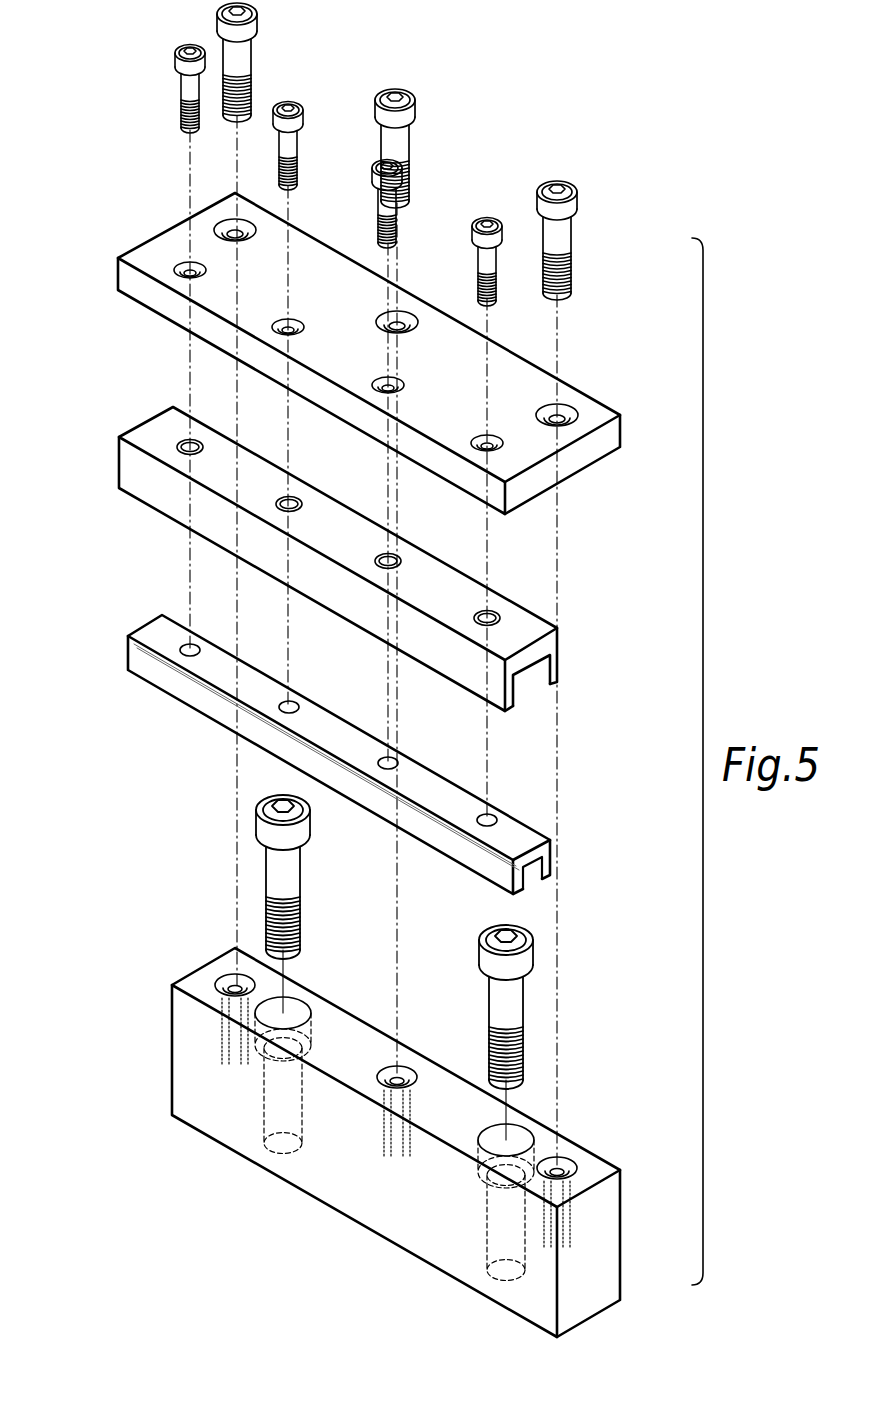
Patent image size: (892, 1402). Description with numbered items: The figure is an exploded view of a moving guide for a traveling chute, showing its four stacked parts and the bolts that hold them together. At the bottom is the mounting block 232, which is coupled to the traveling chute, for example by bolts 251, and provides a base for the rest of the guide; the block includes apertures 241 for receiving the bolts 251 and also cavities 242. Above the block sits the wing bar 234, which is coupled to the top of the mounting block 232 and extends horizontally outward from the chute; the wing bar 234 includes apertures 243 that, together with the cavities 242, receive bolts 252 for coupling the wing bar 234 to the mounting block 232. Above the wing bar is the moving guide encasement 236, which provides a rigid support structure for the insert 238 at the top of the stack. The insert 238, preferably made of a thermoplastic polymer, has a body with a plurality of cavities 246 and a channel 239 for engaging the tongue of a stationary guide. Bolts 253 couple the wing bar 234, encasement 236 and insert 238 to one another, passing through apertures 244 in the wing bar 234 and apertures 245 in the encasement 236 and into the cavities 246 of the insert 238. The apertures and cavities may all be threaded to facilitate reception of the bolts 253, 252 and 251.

The mounting block 232 is at (612, 1250).
The wing bar 234 is at (593, 398).
The moving guide encasement 236 is at (142, 425).
The insert 238 is at (142, 630).
The channel 239 is at (537, 880).
The apertures 241 is at (293, 1004).
The cavities 242 is at (218, 980).
The apertures 243 is at (402, 316).
The apertures 244 is at (178, 266).
The apertures 245 is at (298, 698).
The cavities 246 is at (494, 612).
The bolts 251 is at (527, 935).
The bolts 252 is at (415, 98).
The bolts 253 is at (178, 50).